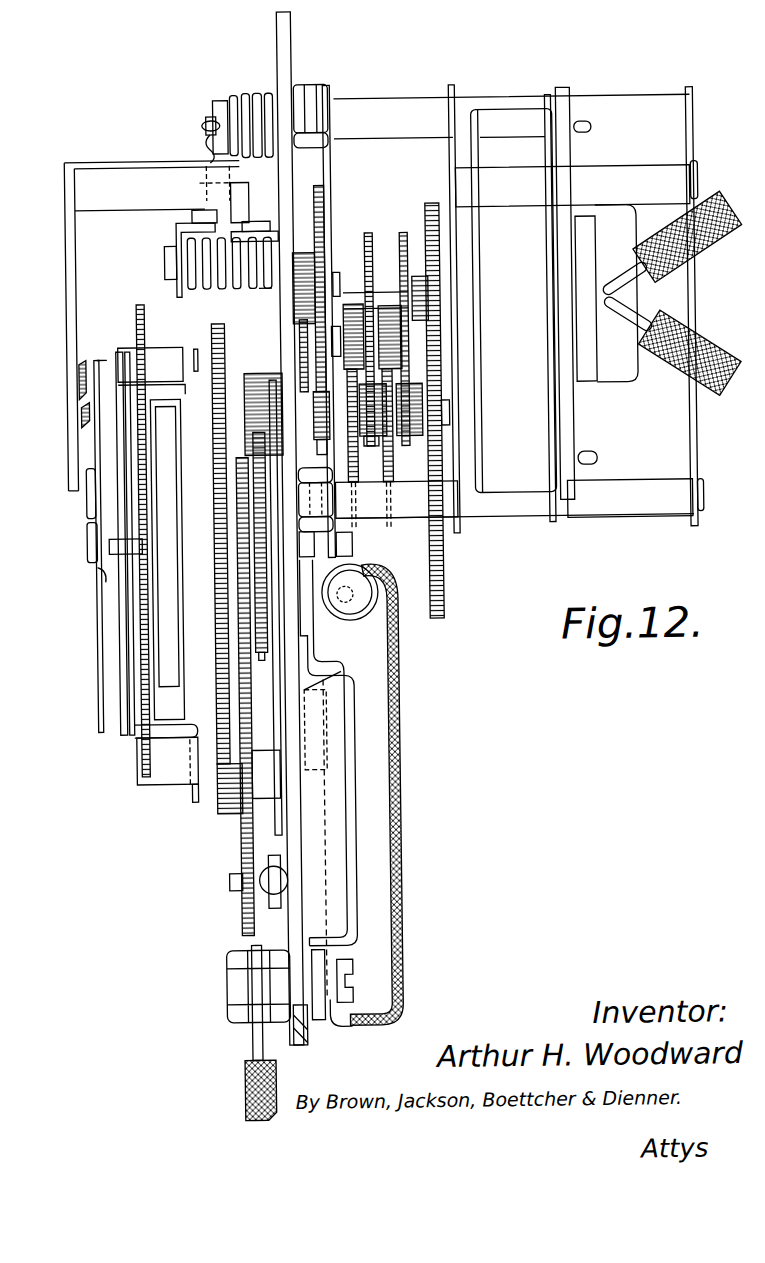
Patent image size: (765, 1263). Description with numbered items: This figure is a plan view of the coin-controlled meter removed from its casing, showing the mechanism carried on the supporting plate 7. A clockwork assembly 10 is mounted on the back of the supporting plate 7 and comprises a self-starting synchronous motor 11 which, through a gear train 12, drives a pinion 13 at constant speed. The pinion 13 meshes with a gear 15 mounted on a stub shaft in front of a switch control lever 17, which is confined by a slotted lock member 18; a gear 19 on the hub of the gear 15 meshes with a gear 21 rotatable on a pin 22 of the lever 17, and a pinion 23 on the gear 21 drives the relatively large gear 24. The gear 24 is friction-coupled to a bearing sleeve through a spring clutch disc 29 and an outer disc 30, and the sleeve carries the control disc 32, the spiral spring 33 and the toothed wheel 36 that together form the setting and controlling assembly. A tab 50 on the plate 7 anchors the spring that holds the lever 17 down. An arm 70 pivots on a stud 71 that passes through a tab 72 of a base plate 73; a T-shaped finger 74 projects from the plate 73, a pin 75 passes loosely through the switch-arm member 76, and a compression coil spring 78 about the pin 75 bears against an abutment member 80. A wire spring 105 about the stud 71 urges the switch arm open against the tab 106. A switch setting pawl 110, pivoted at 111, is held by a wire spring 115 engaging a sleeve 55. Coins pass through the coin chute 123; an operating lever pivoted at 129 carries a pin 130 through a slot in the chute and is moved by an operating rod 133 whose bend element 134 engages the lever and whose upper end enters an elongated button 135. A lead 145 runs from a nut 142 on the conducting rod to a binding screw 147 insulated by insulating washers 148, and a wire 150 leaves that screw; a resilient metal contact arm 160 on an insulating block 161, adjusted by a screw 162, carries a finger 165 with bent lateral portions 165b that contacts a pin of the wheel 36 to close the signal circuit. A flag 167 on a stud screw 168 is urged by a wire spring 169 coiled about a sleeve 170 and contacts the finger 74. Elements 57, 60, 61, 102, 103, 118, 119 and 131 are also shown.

The supporting plate 7 is at (298, 44).
The clockwork assembly 10 is at (491, 95).
The self-starting synchronous motor 11 is at (533, 496).
The gear train 12 is at (392, 209).
The pinion 13 is at (264, 386).
The gear 15 is at (262, 652).
The switch control lever 17 is at (279, 690).
The slotted lock member 18 is at (268, 585).
The gear 19 is at (240, 686).
The gear 21 is at (249, 846).
The pin 22 is at (250, 765).
The pinion 23 is at (226, 818).
The gear 24 is at (228, 326).
The spring clutch disc 29 is at (228, 380).
The outer disc 30 is at (197, 349).
The control disc 32 is at (183, 688).
The spiral spring 33 is at (168, 410).
The toothed wheel 36 is at (140, 304).
The tab 50 is at (226, 882).
The sleeve 55 is at (210, 785).
The pin 57 is at (190, 800).
The bracket 60 is at (135, 735).
The block 61 is at (157, 350).
The arm 70 is at (283, 346).
The stud 71 is at (169, 262).
The tab 72 is at (184, 297).
The base plate 73 is at (185, 229).
The T-shaped finger 74 is at (246, 210).
The pin 75 is at (211, 130).
The member 76 is at (197, 214).
The compression coil spring 78 is at (212, 152).
The abutment member 80 is at (212, 120).
The knob 102 is at (712, 350).
The knob 103 is at (716, 258).
The wire spring 105 is at (262, 284).
The tab 106 is at (308, 200).
The switch setting pawl 110 is at (119, 362).
The pivot 111 is at (128, 352).
The wire spring 115 is at (130, 543).
The pin 118 is at (244, 902).
The roller 119 is at (270, 900).
The coin chute 123 is at (349, 928).
The pivot 129 is at (336, 654).
The pin 130 is at (328, 768).
The gear assembly 131 is at (375, 320).
The operating rod 133 is at (378, 582).
The bend element 134 is at (355, 621).
The elongated button 135 is at (398, 590).
The nut 142 is at (88, 545).
The lead 145 is at (400, 829).
The binding screw 147 is at (348, 990).
The insulating washers 148 is at (246, 1030).
The wire 150 is at (239, 1075).
The resilient metal contact arm 160 is at (98, 570).
The insulating block 161 is at (110, 600).
The screw 162 is at (88, 508).
The finger 165 is at (97, 443).
The lateral portions 165b is at (84, 410).
The flag 167 is at (70, 303).
The stud screw 168 is at (219, 104).
The wire spring 169 is at (250, 93).
The sleeve 170 is at (263, 93).